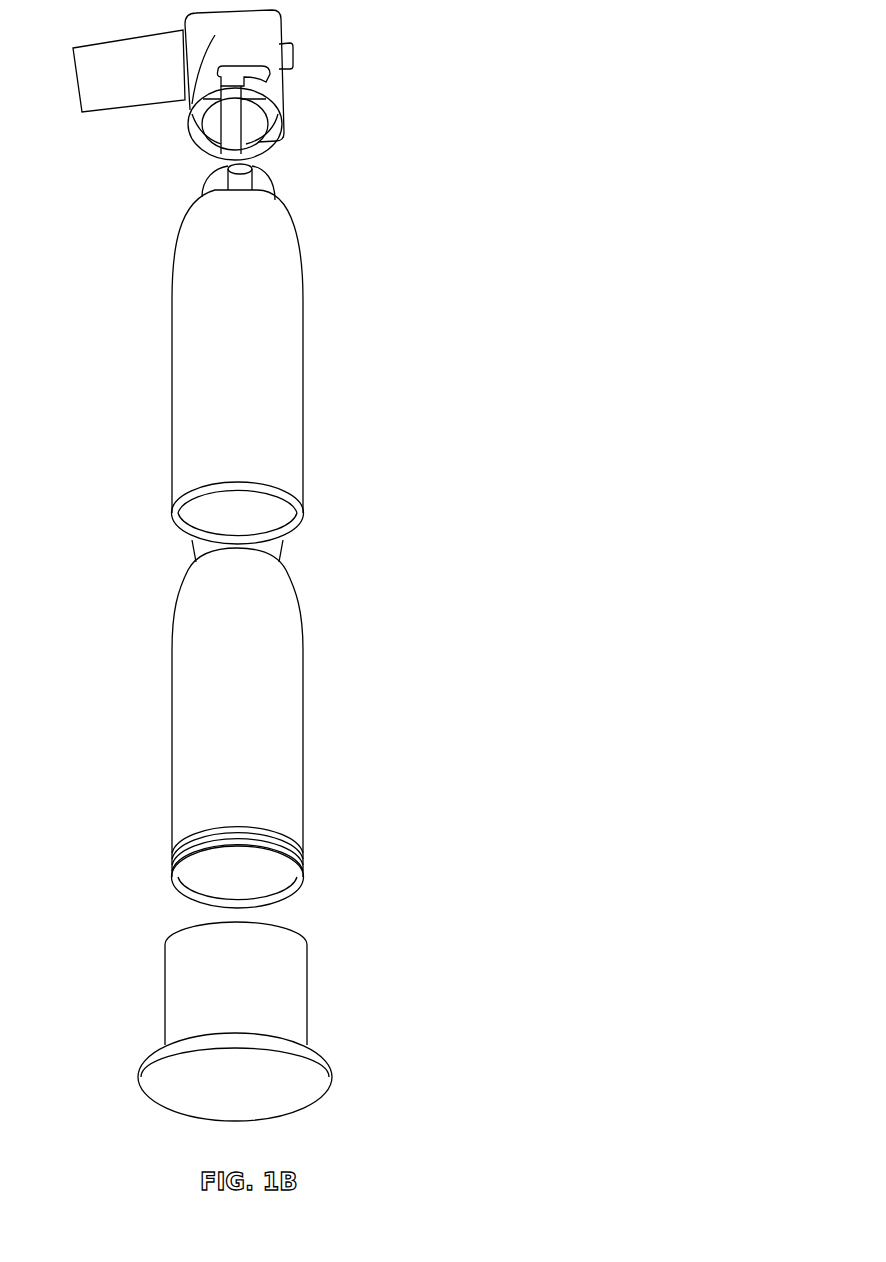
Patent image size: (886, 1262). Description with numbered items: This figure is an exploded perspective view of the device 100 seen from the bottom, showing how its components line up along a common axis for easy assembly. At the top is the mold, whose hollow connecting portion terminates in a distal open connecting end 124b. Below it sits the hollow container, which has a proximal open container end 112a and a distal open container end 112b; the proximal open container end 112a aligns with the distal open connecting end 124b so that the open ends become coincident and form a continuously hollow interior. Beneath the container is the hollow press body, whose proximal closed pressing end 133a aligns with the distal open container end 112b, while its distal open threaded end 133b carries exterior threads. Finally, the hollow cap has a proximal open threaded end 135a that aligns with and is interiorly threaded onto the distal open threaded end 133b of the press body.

The device 100 is at (512, 98).
The distal open connecting end 124b is at (236, 113).
The proximal open container end 112a is at (267, 198).
The distal open container end 112b is at (212, 522).
The proximal closed pressing end 133a is at (255, 548).
The distal open threaded end 133b is at (212, 885).
The proximal open threaded end 135a is at (265, 930).